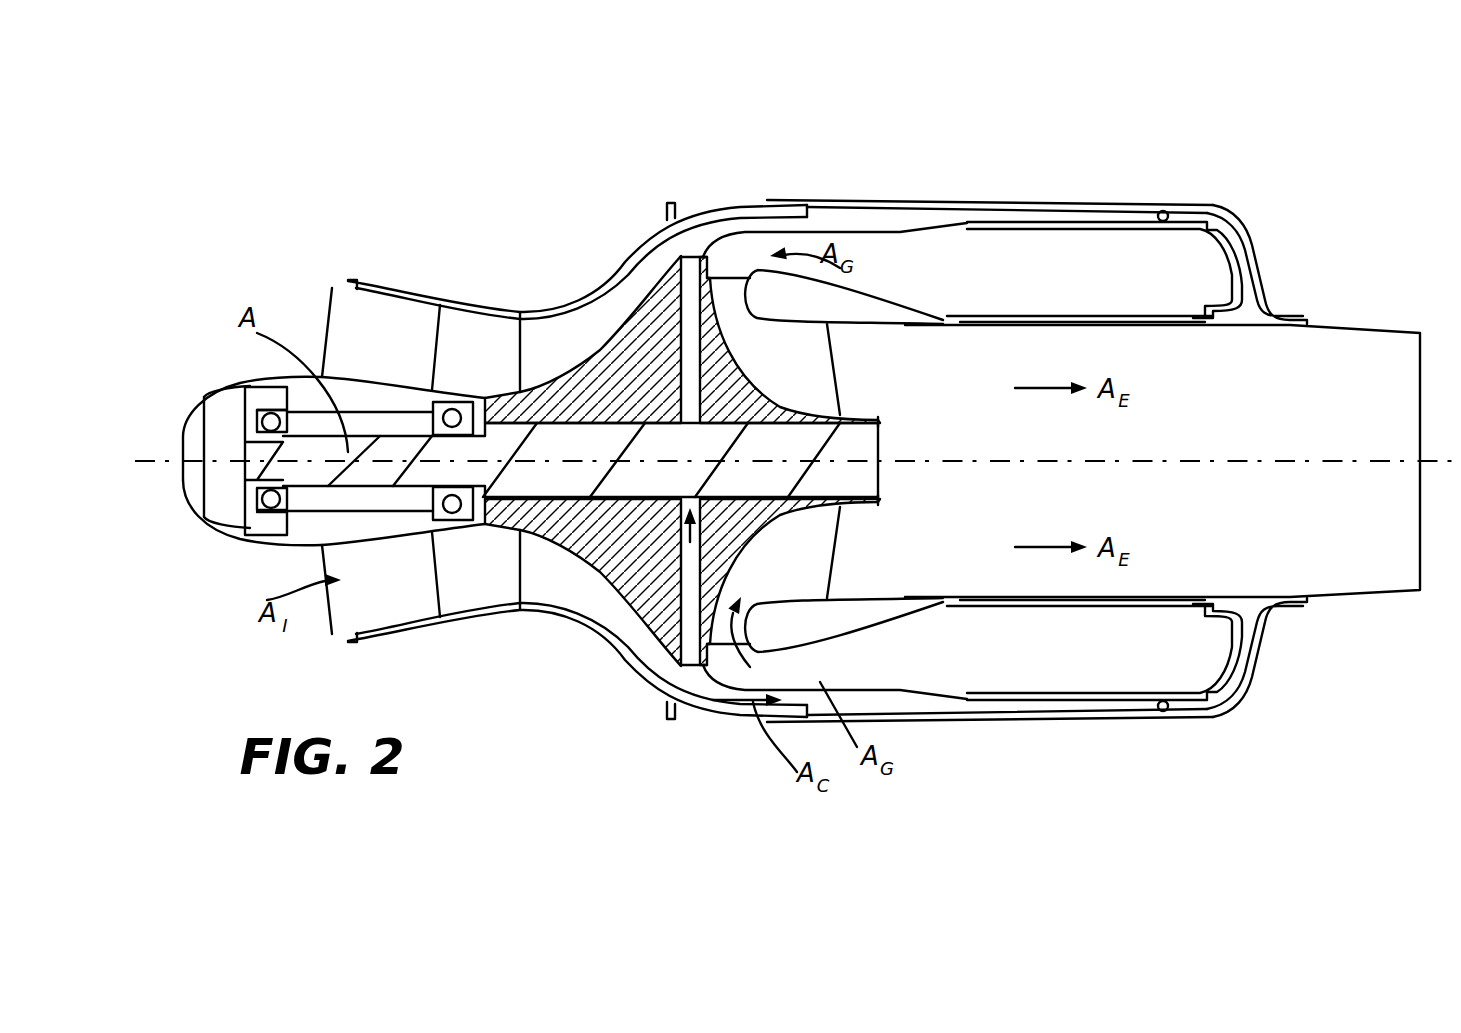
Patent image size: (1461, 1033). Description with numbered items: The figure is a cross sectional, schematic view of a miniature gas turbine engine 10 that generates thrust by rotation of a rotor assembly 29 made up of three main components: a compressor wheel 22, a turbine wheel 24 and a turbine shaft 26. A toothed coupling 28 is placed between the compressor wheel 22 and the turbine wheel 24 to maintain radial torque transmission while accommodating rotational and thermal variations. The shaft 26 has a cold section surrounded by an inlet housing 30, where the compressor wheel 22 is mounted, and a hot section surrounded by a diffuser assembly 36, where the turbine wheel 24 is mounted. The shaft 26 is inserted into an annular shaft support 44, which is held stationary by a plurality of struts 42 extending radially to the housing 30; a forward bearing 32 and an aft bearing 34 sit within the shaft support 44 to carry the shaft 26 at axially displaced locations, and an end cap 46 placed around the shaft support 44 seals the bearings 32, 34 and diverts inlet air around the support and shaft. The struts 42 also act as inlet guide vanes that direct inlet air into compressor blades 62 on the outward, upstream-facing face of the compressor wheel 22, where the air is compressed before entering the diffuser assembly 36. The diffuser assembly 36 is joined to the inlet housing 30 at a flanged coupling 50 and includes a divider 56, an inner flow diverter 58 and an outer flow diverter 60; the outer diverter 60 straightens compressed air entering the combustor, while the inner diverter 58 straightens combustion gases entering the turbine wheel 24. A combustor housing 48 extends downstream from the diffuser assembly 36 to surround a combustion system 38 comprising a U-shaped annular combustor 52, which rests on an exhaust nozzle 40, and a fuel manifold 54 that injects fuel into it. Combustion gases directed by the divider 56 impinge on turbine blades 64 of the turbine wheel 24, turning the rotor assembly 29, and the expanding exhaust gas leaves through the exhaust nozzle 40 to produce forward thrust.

The miniature gas turbine engine 10 is at (795, 302).
The compressor wheel 22 is at (640, 353).
The turbine wheel 24 is at (830, 553).
The turbine shaft 26 is at (607, 607).
The toothed coupling 28 is at (706, 668).
The rotor assembly 29 is at (937, 370).
The inlet housing 30 is at (367, 280).
The forward bearing 32 is at (247, 530).
The aft bearing 34 is at (466, 522).
The diffuser assembly 36 is at (770, 154).
The combustion system 38 is at (1254, 412).
The exhaust nozzle 40 is at (1347, 600).
The struts 42 is at (454, 362).
The shaft support 44 is at (358, 536).
The end cap 46 is at (195, 438).
The combustor housing 48 is at (973, 200).
The flanged coupling 50 is at (672, 203).
The combustor 52 is at (1128, 222).
The fuel manifold 54 is at (1210, 763).
The divider 56 is at (820, 232).
The inner flow diverter 58 is at (860, 238).
The outer flow diverter 60 is at (702, 216).
The compressor blades 62 is at (534, 358).
The turbine blades 64 is at (768, 366).